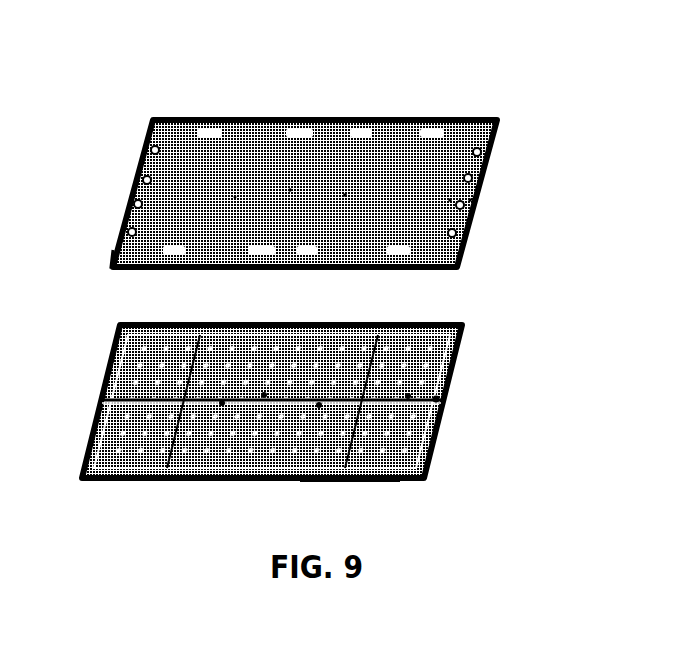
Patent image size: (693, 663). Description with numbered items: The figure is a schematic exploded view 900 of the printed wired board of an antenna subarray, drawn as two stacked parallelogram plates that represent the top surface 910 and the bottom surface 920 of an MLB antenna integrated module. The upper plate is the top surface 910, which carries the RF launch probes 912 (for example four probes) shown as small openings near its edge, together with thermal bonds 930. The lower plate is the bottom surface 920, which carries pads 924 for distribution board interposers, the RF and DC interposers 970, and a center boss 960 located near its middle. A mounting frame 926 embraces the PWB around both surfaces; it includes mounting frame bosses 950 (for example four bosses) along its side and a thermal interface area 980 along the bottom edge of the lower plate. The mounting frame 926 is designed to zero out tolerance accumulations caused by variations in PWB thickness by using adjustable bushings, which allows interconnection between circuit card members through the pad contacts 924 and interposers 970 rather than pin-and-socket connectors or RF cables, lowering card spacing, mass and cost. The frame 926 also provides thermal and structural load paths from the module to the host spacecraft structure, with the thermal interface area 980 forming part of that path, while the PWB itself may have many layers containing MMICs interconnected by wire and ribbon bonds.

The exploded view 900 is at (113, 97).
The top surface 910 is at (491, 107).
The RF launch probes 912 is at (266, 125).
The bottom surface 920 is at (467, 311).
The pads 924 is at (317, 408).
The mounting frame 926 is at (116, 333).
The thermal bonds 930 is at (354, 130).
The mounting frame bosses 950 is at (442, 396).
The center boss 960 is at (262, 398).
The RF and DC interposers 970 is at (412, 399).
The thermal interface area 980 is at (359, 483).